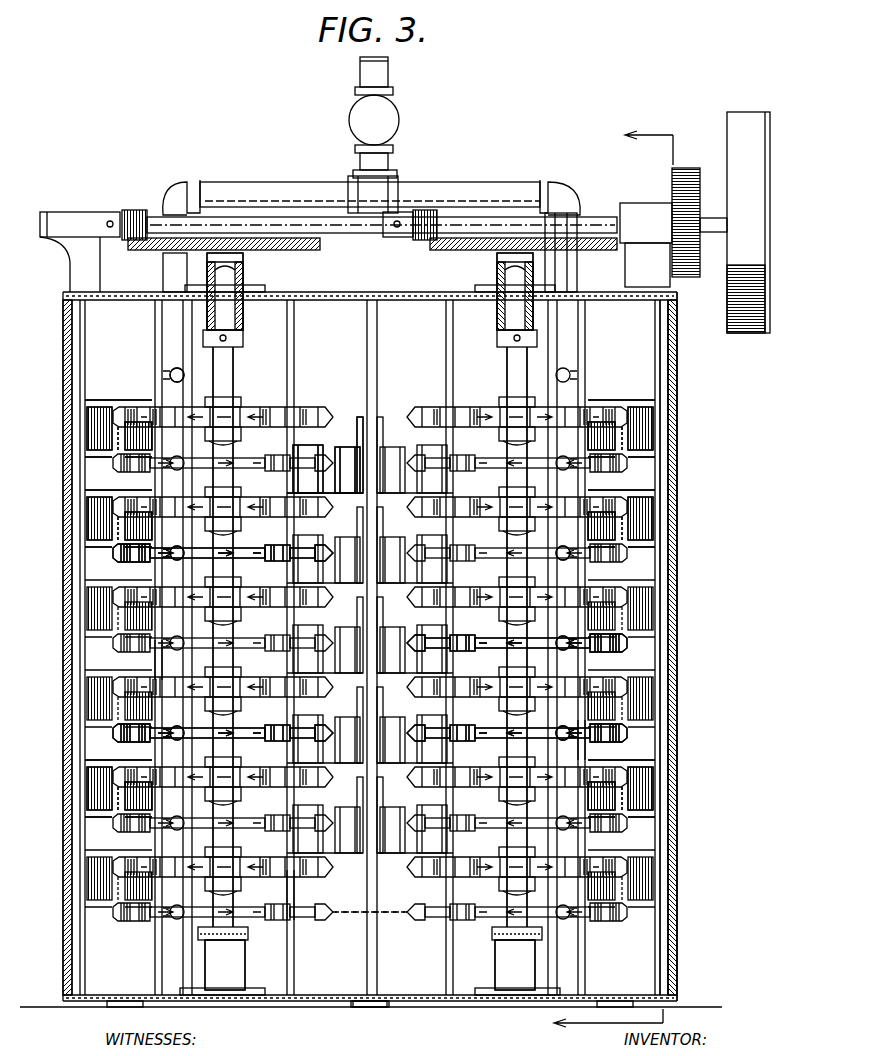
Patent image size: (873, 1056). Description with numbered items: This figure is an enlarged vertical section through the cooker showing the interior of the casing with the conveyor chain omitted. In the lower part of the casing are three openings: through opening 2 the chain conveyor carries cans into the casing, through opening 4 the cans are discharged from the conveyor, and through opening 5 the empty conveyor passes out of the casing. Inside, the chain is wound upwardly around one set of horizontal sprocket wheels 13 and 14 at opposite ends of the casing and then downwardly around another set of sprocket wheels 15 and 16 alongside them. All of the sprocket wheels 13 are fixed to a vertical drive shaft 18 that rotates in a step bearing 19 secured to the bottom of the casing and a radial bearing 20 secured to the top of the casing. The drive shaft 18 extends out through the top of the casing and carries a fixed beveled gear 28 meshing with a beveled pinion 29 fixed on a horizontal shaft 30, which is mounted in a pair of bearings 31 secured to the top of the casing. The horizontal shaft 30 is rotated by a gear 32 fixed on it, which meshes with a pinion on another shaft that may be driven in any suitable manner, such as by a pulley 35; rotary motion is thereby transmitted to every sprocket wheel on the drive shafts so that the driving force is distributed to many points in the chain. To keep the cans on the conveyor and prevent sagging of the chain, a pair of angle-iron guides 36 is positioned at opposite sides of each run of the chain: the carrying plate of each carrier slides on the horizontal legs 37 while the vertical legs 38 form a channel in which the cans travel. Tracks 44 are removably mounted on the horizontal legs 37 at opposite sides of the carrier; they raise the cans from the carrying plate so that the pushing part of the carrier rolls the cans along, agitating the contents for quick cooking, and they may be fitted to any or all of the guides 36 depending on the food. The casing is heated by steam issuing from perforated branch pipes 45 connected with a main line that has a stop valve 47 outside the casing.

The opening 2 is at (643, 913).
The opening 4 is at (595, 584).
The opening 5 is at (318, 893).
The sprocket wheels 13 is at (630, 417).
The sprocket wheels 14 is at (670, 597).
The sprocket wheels 15 is at (90, 492).
The sprocket wheels 16 is at (495, 187).
The vertical drive shaft 18 is at (520, 373).
The step bearing 19 is at (230, 967).
The radial bearing 20 is at (247, 280).
The beveled gear 28 is at (195, 238).
The beveled pinion 29 is at (127, 208).
The horizontal shaft 30 is at (333, 222).
The bearings 31 is at (88, 264).
The gear 32 is at (687, 175).
The pulley 35 is at (750, 125).
The guides 36 is at (148, 756).
The horizontal legs 37 is at (133, 790).
The vertical legs 38 is at (153, 660).
The tracks 44 is at (148, 400).
The perforated branch pipes 45 is at (190, 378).
The stop valve 47 is at (360, 108).